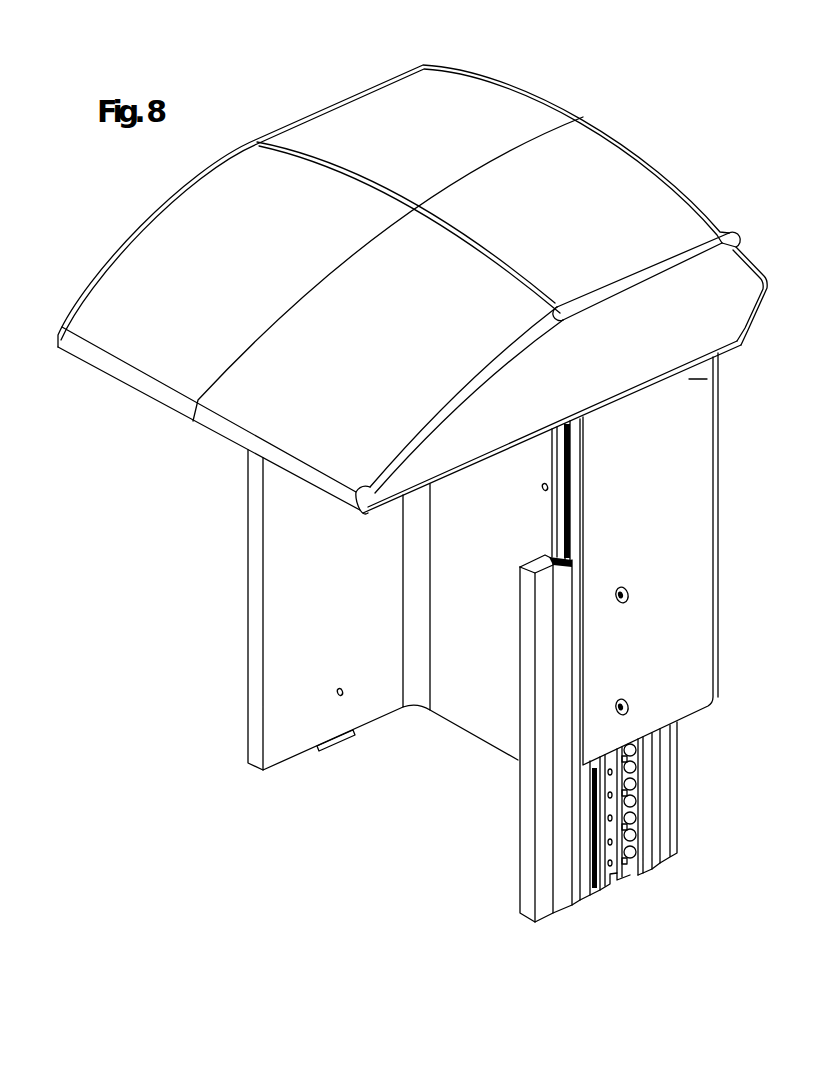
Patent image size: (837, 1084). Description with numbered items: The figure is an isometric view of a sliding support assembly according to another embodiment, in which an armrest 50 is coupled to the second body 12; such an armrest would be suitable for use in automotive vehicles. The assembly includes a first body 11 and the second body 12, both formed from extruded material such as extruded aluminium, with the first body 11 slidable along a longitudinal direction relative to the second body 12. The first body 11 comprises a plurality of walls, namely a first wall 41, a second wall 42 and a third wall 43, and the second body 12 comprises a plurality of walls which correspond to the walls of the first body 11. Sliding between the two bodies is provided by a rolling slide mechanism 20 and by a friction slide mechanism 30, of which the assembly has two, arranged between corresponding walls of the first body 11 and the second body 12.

The armrest 50 is at (477, 110).
The third wall 43 is at (297, 570).
The first body 11 is at (258, 725).
The second wall 42 is at (475, 680).
The first wall 41 is at (533, 732).
The friction slide mechanism 30 is at (563, 563).
The second body 12 is at (693, 590).
The rolling slide mechanism 20 is at (635, 797).